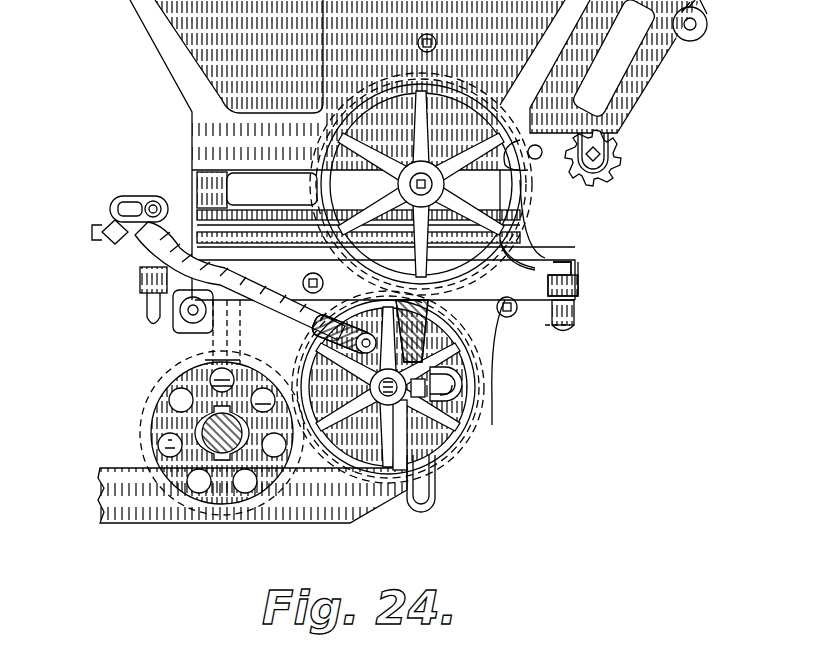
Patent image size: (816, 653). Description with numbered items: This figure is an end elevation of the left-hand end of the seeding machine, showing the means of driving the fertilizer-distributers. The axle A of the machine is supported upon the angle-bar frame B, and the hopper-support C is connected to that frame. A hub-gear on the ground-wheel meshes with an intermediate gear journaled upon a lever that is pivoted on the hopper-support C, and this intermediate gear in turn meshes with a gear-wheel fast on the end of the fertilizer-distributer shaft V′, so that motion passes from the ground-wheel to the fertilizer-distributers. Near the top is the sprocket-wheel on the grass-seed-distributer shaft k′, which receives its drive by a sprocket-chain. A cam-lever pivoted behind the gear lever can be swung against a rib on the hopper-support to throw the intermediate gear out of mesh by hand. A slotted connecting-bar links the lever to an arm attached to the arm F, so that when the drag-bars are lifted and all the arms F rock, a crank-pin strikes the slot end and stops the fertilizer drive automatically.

The arm F is at (208, 281).
The axle A is at (200, 422).
The angle-bar frame B is at (98, 490).
The shaft V′ is at (421, 184).
The grass-seed-distributer shaft k′ is at (618, 150).
The hopper-support C is at (578, 312).